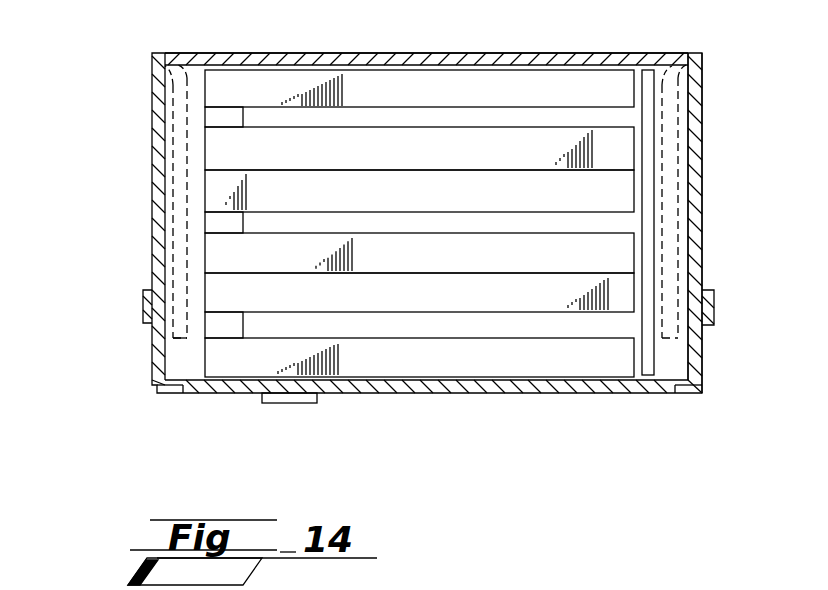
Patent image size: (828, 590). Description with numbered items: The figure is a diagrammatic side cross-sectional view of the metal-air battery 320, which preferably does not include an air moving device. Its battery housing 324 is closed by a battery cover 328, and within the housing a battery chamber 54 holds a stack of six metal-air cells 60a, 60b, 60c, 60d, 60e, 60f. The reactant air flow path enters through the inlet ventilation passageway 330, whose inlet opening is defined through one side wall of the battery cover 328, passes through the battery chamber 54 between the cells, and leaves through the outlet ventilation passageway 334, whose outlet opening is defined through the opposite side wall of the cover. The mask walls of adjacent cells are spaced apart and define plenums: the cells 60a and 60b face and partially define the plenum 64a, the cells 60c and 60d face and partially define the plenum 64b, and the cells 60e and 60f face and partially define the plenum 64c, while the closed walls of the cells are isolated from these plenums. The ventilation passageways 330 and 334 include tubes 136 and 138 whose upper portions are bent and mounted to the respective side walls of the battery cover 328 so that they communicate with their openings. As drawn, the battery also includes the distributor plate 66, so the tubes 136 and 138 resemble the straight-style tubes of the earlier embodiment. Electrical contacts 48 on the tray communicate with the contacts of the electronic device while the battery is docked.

The metal-air battery 320 is at (112, 45).
The battery housing 324 is at (442, 44).
The battery cover 328 is at (703, 193).
The inlet ventilation passageway 330 is at (186, 76).
The outlet ventilation passageway 334 is at (662, 52).
The tube 136 is at (173, 108).
The tube 138 is at (680, 116).
The metal-air cell 60a is at (440, 96).
The metal-air cell 60b is at (440, 158).
The metal-air cell 60c is at (440, 208).
The metal-air cell 60d is at (450, 263).
The metal-air cell 60e is at (450, 302).
The metal-air cell 60f is at (465, 367).
The plenum 64a is at (508, 117).
The plenum 64b is at (528, 222).
The plenum 64c is at (560, 326).
The distributor plate 66 is at (657, 357).
The battery chamber 54 is at (189, 368).
The electrical contacts 48 is at (287, 403).